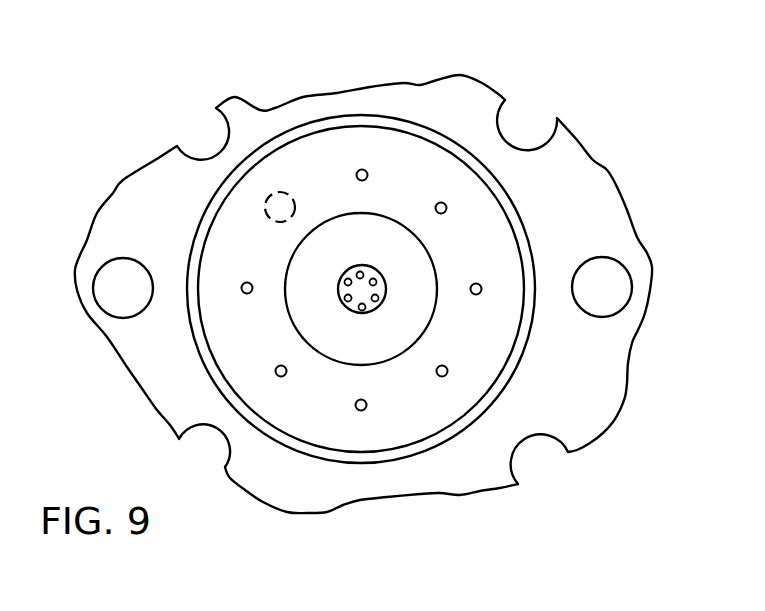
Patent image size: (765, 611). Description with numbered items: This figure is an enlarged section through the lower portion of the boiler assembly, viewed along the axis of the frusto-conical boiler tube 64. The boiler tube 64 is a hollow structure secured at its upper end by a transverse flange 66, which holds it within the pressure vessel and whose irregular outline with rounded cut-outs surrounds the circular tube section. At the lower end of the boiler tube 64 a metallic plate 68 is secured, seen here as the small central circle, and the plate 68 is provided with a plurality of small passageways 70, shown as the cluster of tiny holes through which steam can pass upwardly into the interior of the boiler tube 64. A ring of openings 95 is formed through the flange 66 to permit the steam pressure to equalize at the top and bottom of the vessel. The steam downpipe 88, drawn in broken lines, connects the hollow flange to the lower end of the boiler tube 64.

The frusto-conical boiler tube 64 is at (413, 320).
The transverse flange 66 is at (247, 348).
The metallic plate 68 is at (387, 287).
The small passageways 70 is at (340, 294).
The steam downpipe 88 is at (281, 192).
The openings 95 is at (242, 283).